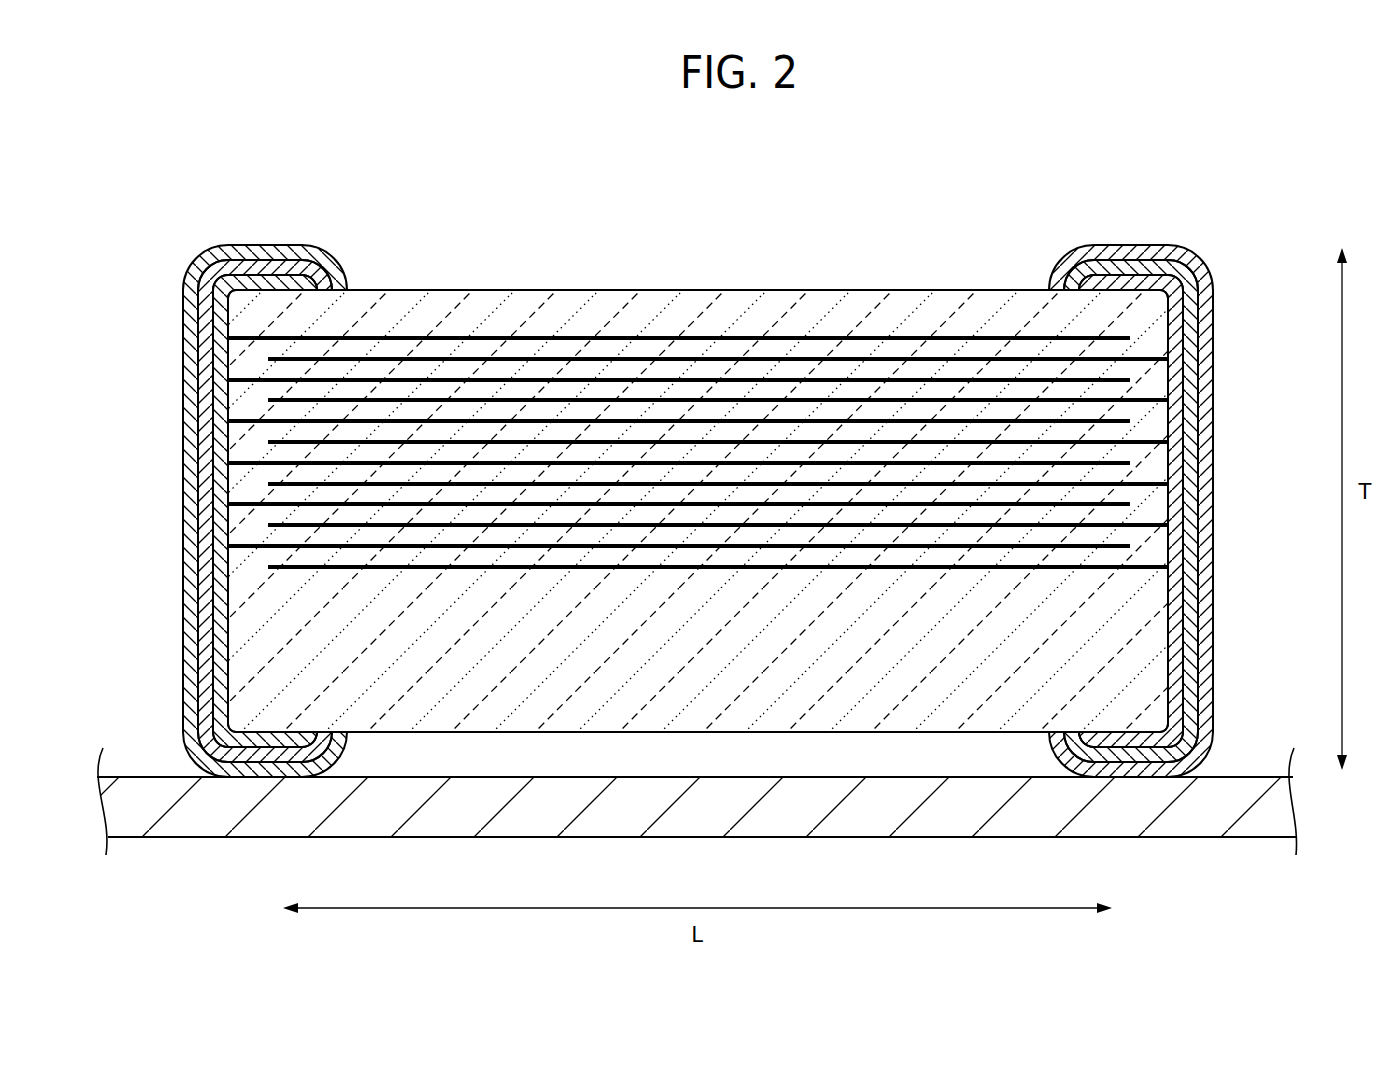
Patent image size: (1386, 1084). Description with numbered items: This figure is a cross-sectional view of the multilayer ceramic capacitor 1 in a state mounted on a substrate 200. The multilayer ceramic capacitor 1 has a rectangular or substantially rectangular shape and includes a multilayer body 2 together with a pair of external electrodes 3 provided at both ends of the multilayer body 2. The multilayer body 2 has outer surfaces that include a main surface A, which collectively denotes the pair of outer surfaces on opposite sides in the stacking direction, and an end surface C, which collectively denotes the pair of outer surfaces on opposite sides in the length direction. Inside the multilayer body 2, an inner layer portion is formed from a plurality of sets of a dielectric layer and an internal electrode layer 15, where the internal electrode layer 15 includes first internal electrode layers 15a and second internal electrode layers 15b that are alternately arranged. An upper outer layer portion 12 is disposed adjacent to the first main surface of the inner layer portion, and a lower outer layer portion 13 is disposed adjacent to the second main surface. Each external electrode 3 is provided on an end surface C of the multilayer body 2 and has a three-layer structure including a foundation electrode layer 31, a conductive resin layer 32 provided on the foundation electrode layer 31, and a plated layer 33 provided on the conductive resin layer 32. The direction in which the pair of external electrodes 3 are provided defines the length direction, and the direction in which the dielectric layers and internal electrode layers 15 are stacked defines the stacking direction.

The multilayer ceramic capacitor 1 is at (903, 167).
The multilayer body 2 is at (889, 283).
The external electrode 3 is at (248, 157).
The foundation electrode layer 31 is at (303, 280).
The conductive resin layer 32 is at (281, 267).
The plated layer 33 is at (253, 253).
The upper outer layer portion 12 is at (573, 315).
The lower outer layer portion 13 is at (573, 712).
The internal electrode layer 15 is at (505, 222).
The first internal electrode layer 15a is at (418, 336).
The second internal electrode layer 15b is at (482, 357).
The substrate 200 is at (1210, 817).
The main surface A is at (700, 290).
The end surface C is at (213, 478).